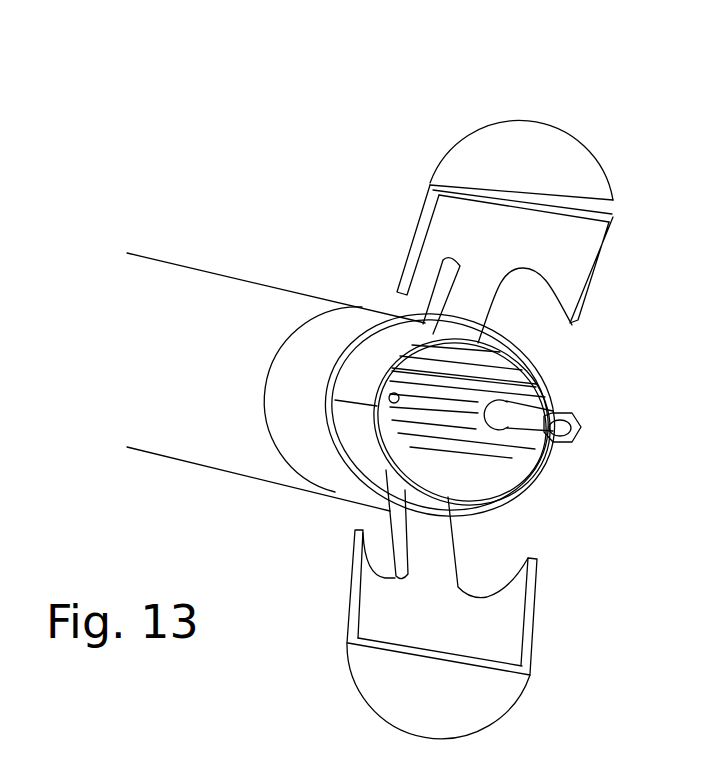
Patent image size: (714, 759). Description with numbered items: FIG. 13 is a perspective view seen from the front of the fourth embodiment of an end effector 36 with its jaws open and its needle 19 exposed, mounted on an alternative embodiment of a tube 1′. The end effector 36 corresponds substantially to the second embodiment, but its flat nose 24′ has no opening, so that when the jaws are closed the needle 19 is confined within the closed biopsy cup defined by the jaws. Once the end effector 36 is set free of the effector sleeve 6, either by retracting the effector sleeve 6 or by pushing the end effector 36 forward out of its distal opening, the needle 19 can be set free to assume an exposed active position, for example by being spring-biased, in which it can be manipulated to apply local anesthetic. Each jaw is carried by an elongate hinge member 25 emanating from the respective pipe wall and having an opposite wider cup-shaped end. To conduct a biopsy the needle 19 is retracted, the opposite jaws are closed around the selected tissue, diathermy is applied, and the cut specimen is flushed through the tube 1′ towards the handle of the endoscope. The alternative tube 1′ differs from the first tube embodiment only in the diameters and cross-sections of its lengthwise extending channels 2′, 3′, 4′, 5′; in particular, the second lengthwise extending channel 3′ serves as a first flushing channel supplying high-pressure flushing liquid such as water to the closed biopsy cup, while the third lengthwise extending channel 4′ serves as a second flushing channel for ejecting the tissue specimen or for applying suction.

The end effector 36 is at (248, 236).
The effector sleeve 6 is at (278, 398).
The flat nose 24′ is at (487, 157).
The second lengthwise extending channel 3′ is at (398, 352).
The lengthwise extending channel 2′ is at (380, 391).
The third lengthwise extending channel 4′ is at (447, 467).
The tube 1′ is at (488, 370).
The lengthwise extending channel 5′ is at (500, 400).
The needle 19 is at (568, 420).
The elongate hinge member 25 is at (400, 530).